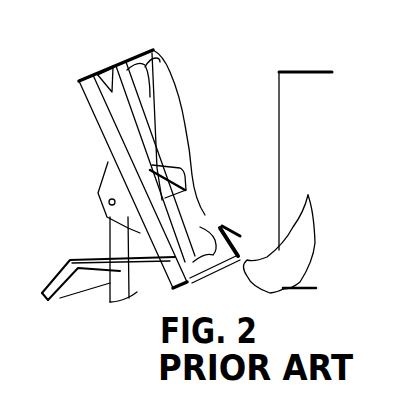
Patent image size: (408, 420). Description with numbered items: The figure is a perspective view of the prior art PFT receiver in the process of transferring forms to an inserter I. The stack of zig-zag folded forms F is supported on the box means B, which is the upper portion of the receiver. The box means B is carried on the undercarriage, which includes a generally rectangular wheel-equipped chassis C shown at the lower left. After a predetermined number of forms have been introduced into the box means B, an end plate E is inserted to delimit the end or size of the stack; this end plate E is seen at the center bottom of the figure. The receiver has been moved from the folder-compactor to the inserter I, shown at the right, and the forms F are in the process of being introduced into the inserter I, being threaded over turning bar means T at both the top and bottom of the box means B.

The box means B is at (108, 135).
The turning bar means T is at (160, 62).
The forms F is at (188, 214).
The end plate E is at (222, 262).
The chassis C is at (62, 273).
The inserter I is at (307, 95).